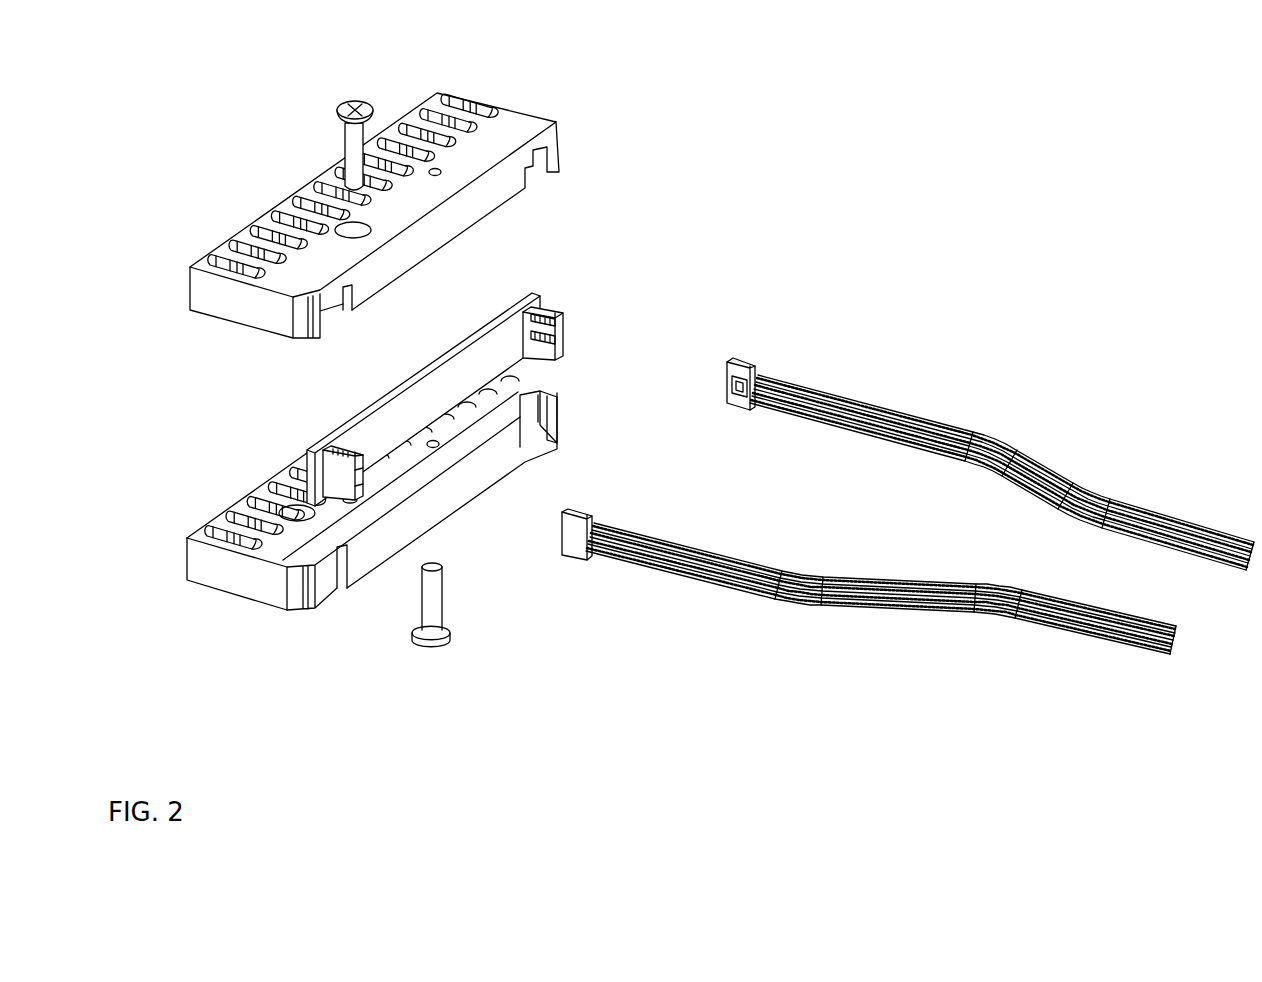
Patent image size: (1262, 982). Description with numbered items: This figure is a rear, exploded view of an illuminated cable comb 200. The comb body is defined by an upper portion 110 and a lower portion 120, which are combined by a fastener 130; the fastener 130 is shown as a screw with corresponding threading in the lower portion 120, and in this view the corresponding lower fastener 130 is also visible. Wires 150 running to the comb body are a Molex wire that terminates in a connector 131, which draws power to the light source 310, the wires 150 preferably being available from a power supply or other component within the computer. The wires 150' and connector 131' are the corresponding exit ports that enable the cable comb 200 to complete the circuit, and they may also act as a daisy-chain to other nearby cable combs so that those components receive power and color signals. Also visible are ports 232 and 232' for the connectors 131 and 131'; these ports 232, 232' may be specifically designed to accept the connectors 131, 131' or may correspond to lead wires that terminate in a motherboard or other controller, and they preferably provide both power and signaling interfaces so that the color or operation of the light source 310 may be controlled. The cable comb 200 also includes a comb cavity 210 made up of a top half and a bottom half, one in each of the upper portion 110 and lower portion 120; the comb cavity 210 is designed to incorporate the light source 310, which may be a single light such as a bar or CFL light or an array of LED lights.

The upper portion 110 is at (537, 128).
The lower portion 120 is at (273, 587).
The fastener 130 is at (352, 106).
The connector 131 is at (787, 361).
The connector 131' is at (628, 562).
The wires 150 is at (1002, 470).
The wires 150' is at (881, 588).
The illuminated cable comb 200 is at (668, 664).
The comb cavity 210 is at (527, 424).
The port 232 is at (590, 349).
The port 232' is at (415, 496).
The light source 310 is at (486, 350).